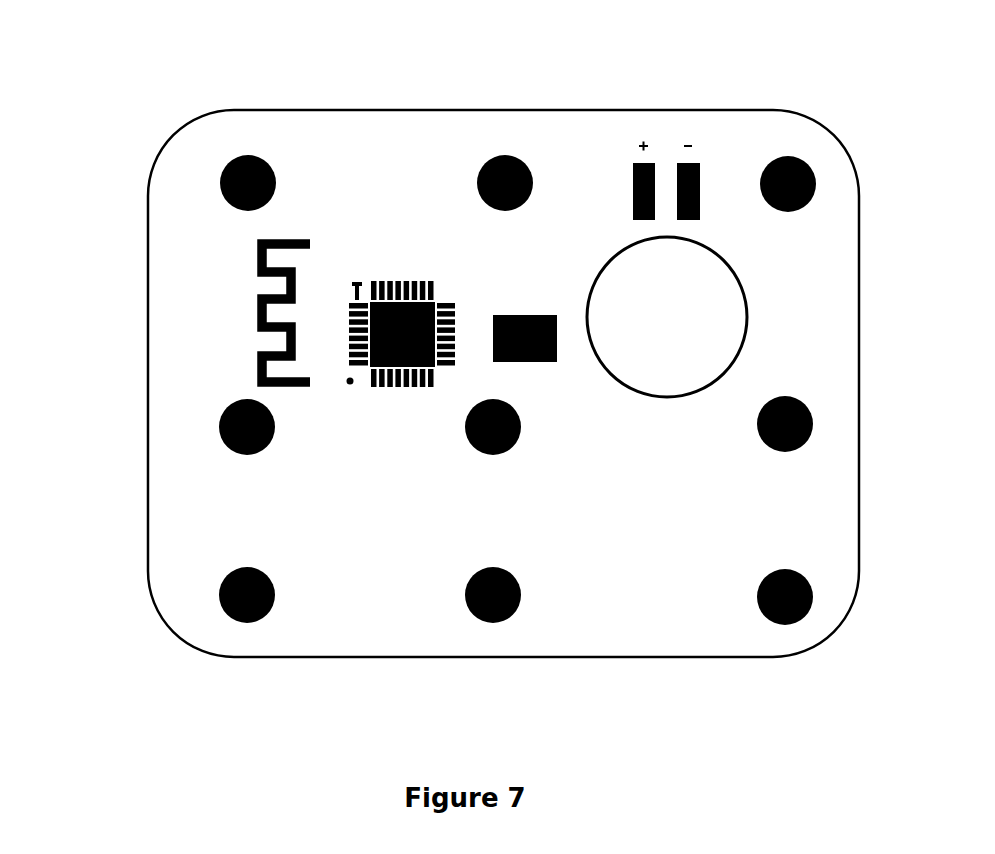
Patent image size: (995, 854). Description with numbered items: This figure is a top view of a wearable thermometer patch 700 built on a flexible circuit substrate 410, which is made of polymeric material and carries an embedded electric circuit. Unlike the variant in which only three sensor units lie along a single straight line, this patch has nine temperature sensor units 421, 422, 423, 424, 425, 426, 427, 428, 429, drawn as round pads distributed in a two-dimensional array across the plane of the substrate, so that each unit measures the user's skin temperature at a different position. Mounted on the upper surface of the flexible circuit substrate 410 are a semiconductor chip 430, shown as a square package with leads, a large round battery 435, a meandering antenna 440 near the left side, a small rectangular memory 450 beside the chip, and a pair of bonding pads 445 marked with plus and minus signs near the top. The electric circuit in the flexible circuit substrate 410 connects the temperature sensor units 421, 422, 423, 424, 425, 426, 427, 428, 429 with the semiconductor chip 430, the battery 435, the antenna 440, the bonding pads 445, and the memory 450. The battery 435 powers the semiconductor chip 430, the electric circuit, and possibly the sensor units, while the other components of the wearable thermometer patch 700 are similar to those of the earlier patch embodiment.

The wearable thermometer patch 700 is at (564, 355).
The flexible circuit substrate 410 is at (862, 268).
The temperature sensor unit 421 is at (255, 155).
The temperature sensor unit 422 is at (513, 155).
The temperature sensor unit 423 is at (787, 157).
The temperature sensor unit 424 is at (229, 455).
The temperature sensor unit 425 is at (480, 445).
The temperature sensor unit 426 is at (797, 448).
The temperature sensor unit 427 is at (235, 620).
The temperature sensor unit 428 is at (487, 615).
The temperature sensor unit 429 is at (795, 622).
The semiconductor chip 430 is at (400, 272).
The battery 435 is at (750, 325).
The antenna 440 is at (257, 318).
The bonding pads 445 is at (648, 128).
The memory 450 is at (522, 317).